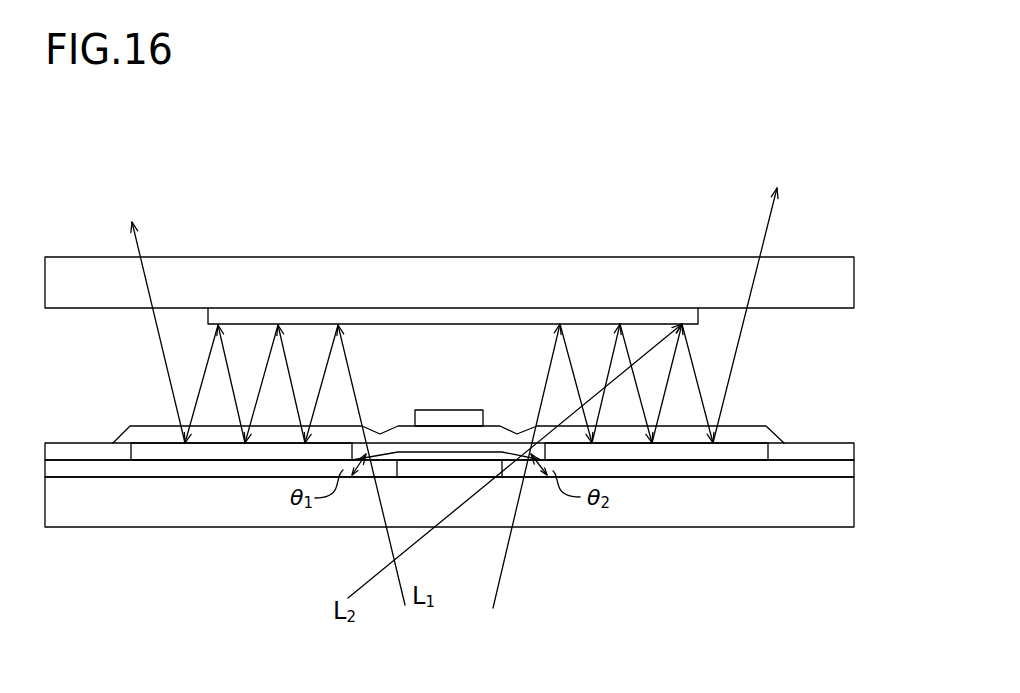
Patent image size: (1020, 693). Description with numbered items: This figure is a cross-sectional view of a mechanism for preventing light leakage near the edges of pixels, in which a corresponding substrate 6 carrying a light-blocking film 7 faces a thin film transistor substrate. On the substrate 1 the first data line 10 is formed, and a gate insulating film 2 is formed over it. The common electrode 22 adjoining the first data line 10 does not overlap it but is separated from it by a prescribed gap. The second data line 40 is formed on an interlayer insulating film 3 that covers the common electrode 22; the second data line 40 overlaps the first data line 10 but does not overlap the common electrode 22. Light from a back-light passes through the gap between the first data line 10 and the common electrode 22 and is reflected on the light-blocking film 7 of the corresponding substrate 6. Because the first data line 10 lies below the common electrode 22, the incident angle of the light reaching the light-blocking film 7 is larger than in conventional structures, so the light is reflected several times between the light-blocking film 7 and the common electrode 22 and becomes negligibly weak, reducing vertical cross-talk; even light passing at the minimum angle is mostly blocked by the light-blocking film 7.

The substrate 1 is at (847, 515).
The gate insulating film 2 is at (847, 473).
The interlayer insulating film 3 is at (847, 450).
The corresponding substrate 6 is at (847, 283).
The light-blocking film 7 is at (702, 320).
The first data line 10 is at (413, 467).
The common electrode 22 is at (768, 450).
The second data line 40 is at (458, 408).